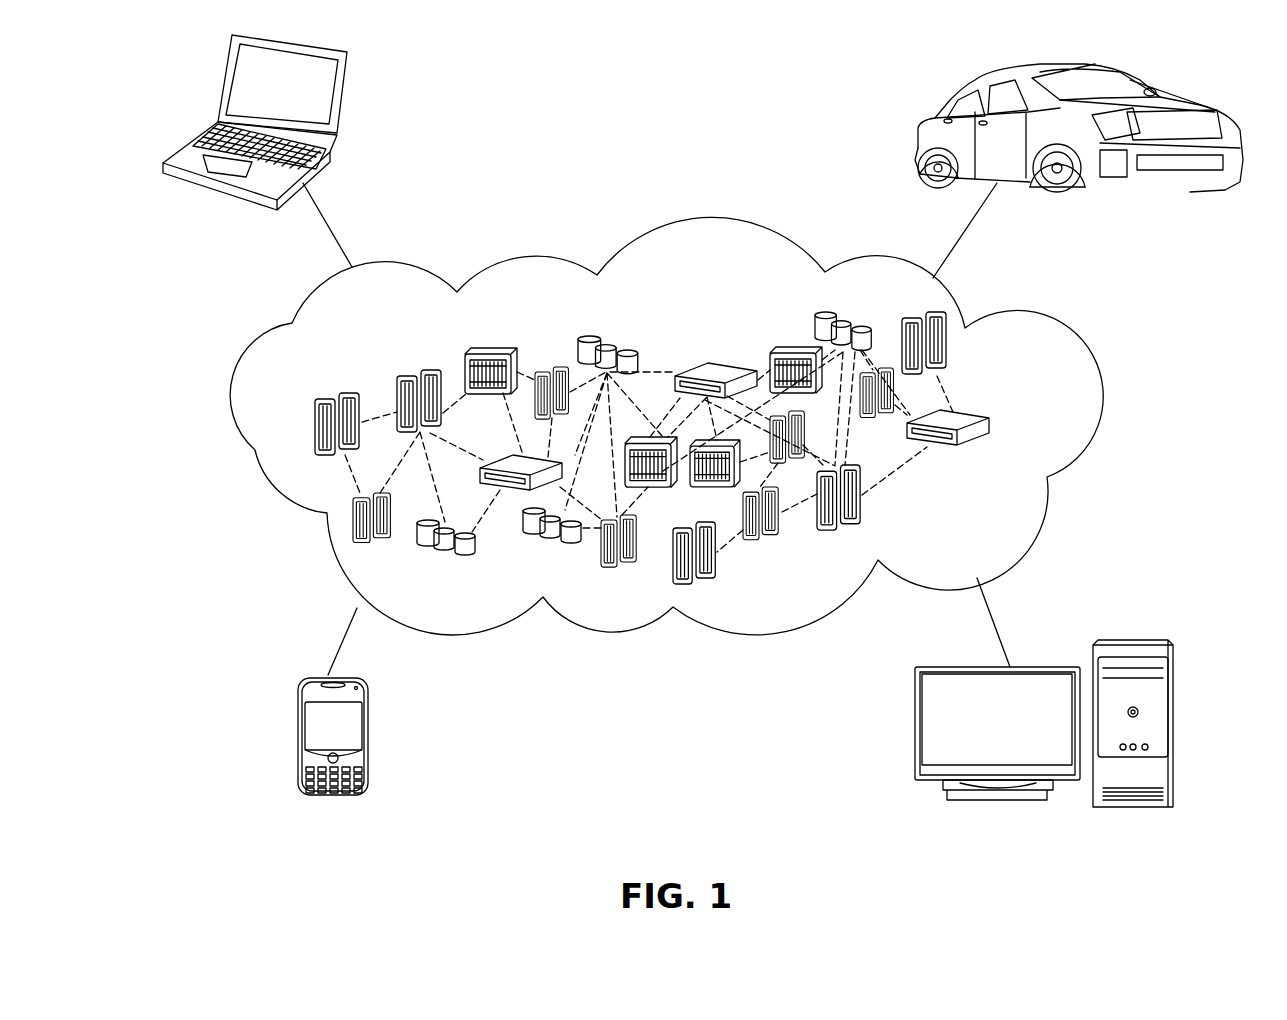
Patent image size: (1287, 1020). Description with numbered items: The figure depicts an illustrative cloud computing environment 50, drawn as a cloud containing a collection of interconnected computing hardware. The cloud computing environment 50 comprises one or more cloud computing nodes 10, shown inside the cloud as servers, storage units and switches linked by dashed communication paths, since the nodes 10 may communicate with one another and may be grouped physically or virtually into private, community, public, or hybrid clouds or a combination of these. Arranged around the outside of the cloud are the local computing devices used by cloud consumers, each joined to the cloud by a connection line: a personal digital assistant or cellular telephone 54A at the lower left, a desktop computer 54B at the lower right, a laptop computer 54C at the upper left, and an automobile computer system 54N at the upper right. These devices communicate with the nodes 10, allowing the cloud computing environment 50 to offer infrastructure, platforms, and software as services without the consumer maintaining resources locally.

The cloud computing node 10 is at (1030, 427).
The cloud computing environment 50 is at (1053, 342).
The personal digital assistant or cellular telephone 54A is at (300, 742).
The desktop computer 54B is at (1140, 640).
The laptop computer 54C is at (338, 112).
The automobile computer system 54N is at (922, 117).